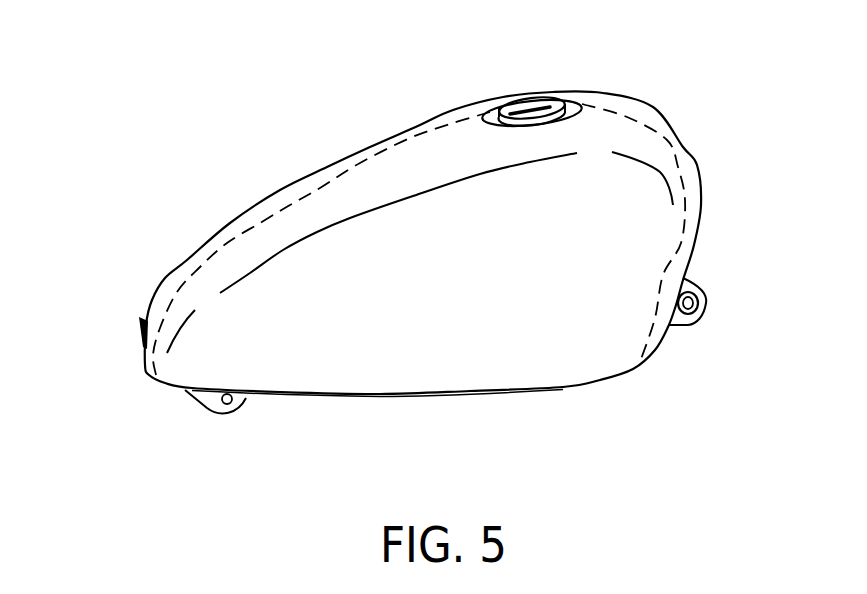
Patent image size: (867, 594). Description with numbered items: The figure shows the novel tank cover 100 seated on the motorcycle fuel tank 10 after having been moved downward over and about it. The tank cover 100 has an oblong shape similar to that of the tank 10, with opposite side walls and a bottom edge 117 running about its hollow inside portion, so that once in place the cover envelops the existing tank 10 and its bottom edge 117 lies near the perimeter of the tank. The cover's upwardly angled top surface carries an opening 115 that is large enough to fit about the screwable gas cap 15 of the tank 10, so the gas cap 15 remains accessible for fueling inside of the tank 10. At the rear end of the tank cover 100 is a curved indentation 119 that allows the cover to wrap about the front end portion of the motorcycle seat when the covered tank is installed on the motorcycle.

The tank cover 100 is at (702, 188).
The motorcycle fuel tank 10 is at (563, 370).
The gas cap 15 is at (527, 100).
The opening 115 is at (573, 100).
The bottom edge 117 is at (408, 395).
The curved indentation 119 is at (143, 362).